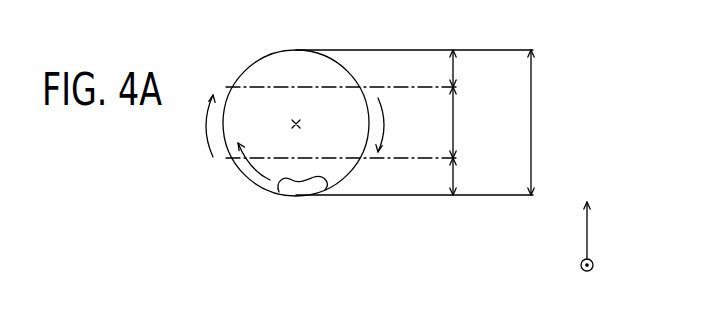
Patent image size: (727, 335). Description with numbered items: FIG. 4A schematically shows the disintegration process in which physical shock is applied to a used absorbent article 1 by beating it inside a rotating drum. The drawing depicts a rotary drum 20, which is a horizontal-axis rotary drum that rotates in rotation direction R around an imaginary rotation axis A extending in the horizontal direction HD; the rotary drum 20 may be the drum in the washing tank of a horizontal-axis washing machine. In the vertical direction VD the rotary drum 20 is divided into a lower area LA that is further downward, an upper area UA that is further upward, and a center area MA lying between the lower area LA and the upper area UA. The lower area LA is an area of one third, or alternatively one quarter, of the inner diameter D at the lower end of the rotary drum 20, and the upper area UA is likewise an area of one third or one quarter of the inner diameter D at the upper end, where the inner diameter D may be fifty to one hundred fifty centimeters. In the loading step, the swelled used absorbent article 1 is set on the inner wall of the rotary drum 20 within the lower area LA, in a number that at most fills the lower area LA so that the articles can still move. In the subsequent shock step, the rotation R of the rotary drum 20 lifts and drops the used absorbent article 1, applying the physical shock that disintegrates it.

The rotary drum 20 is at (245, 73).
The used absorbent article 1 is at (295, 190).
The imaginary rotation axis A is at (297, 118).
The rotation R is at (385, 122).
The upper area UA is at (471, 68).
The center area MA is at (471, 122).
The lower area LA is at (470, 176).
The inner diameter D is at (538, 122).
The vertical direction VD is at (605, 226).
The horizontal direction HD is at (604, 270).